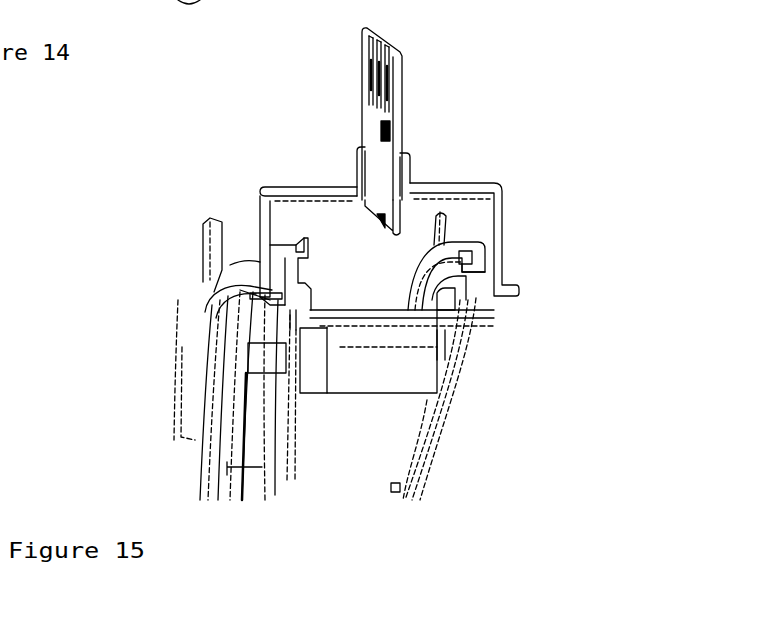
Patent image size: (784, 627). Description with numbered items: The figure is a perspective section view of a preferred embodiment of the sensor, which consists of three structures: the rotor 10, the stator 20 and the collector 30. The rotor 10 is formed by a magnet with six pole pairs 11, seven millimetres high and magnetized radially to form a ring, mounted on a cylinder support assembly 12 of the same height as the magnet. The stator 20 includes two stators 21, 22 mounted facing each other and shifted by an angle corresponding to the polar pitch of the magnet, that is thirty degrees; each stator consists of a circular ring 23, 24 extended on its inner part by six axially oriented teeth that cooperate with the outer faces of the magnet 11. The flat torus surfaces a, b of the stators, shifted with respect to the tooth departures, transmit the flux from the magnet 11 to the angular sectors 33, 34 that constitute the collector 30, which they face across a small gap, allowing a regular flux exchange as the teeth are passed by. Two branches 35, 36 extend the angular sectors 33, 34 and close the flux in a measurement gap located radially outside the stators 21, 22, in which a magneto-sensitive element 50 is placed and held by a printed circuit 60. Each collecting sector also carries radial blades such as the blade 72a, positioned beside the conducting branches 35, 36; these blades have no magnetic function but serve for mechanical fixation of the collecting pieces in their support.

The rotor 10 is at (352, 463).
The magnet with six pole pairs 11 is at (280, 402).
The cylinder support assembly 12 is at (285, 430).
The stator 20 is at (337, 311).
The stator 21 is at (290, 310).
The stator 22 is at (437, 302).
The circular ring 23 is at (290, 292).
The circular ring 24 is at (463, 290).
The collector 30 is at (382, 200).
The angular sector 33 is at (247, 268).
The angular sector 34 is at (492, 237).
The branch 35 is at (334, 194).
The branch 36 is at (465, 194).
The magneto-sensitive element 50 is at (385, 160).
The printed circuit 60 is at (398, 102).
The radial blade 72a is at (434, 237).
The flat torus surface a is at (278, 266).
The flat torus surface b is at (480, 273).